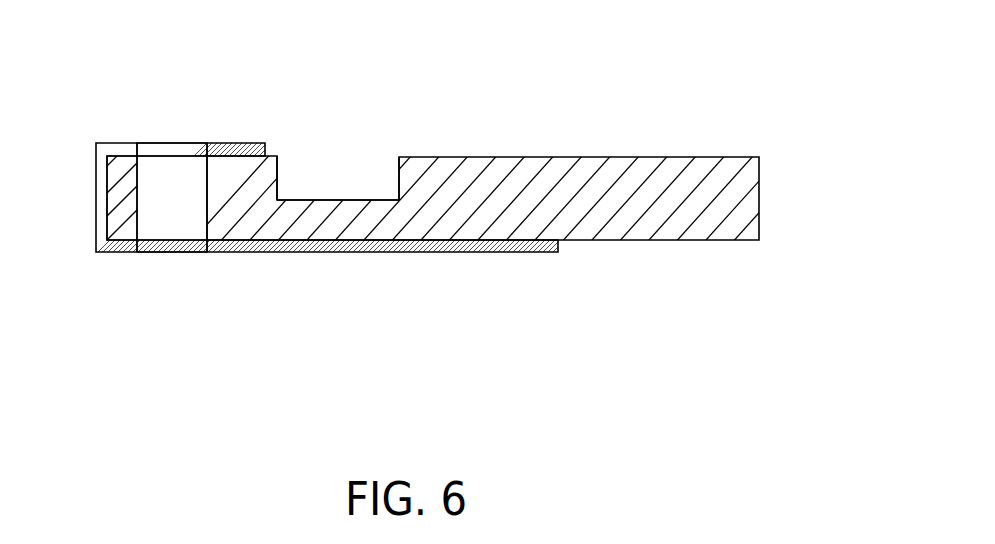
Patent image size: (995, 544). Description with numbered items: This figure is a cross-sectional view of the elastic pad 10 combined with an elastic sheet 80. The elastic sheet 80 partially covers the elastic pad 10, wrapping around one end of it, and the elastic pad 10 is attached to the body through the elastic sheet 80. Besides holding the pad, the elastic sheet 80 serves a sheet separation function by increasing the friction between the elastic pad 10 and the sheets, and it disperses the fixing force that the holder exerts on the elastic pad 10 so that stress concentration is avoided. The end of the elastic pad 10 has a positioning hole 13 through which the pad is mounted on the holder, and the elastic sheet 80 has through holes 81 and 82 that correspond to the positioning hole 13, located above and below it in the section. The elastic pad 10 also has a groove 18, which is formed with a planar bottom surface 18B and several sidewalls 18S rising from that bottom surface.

The elastic pad 10 is at (650, 35).
The positioning hole 13 is at (173, 180).
The groove 18 is at (315, 168).
The planar bottom surface 18B is at (336, 197).
The sidewall 18S is at (278, 178).
The elastic sheet 80 is at (105, 142).
The through hole 81 is at (148, 147).
The through hole 82 is at (150, 243).